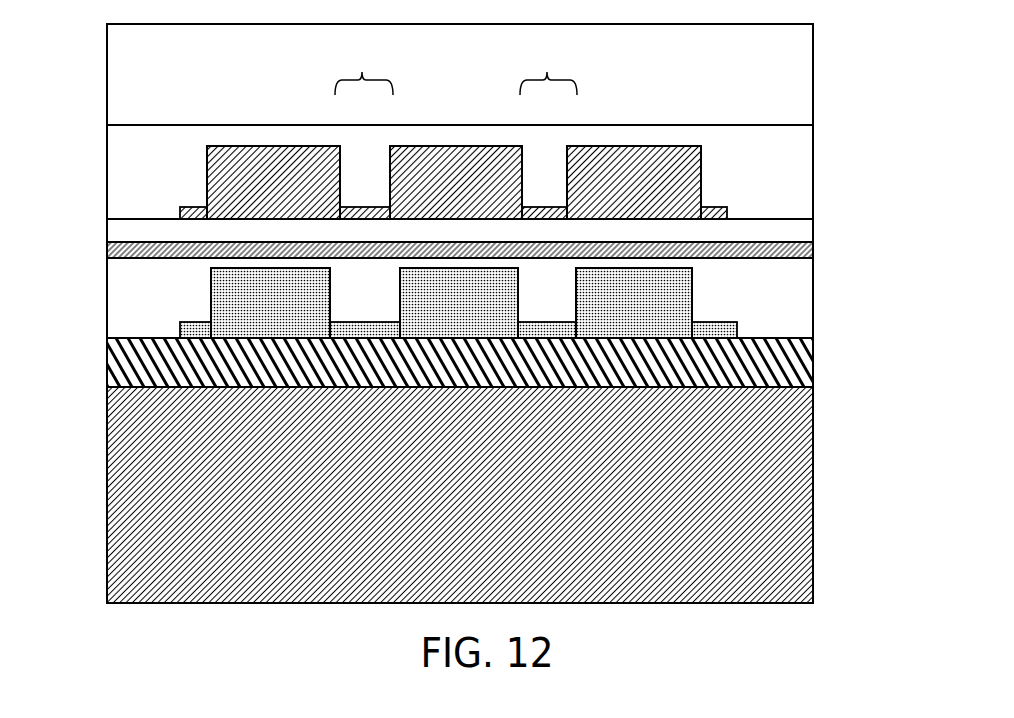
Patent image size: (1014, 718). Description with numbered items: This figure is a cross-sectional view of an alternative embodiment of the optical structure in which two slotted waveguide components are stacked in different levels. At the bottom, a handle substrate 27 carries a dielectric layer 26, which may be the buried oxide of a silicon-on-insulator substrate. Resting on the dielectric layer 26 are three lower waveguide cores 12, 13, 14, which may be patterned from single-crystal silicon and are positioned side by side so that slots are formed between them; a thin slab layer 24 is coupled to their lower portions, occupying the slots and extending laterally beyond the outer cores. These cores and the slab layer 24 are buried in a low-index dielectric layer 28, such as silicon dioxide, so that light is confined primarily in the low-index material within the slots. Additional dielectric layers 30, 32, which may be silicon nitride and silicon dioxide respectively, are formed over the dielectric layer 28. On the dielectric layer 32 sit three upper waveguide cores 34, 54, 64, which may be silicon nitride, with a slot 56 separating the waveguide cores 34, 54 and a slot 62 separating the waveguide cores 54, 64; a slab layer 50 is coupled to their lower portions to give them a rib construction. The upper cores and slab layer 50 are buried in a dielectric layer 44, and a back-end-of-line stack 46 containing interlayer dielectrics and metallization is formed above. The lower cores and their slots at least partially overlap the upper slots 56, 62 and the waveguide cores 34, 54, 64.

The waveguide core 12 is at (440, 302).
The waveguide core 13 is at (235, 291).
The waveguide core 14 is at (655, 296).
The slab layer 24 is at (185, 327).
The dielectric layer 26 is at (770, 366).
The handle substrate 27 is at (143, 514).
The dielectric layer 28 is at (125, 300).
The dielectric layer 30 is at (795, 253).
The dielectric layer 32 is at (130, 233).
The waveguide core 34 is at (660, 180).
The dielectric layer 44 is at (128, 150).
The back-end-of-line stack 46 is at (767, 75).
The slab layer 50 is at (195, 213).
The waveguide core 54 is at (440, 184).
The slot 56 is at (547, 72).
The slot 62 is at (362, 72).
The waveguide core 64 is at (253, 180).